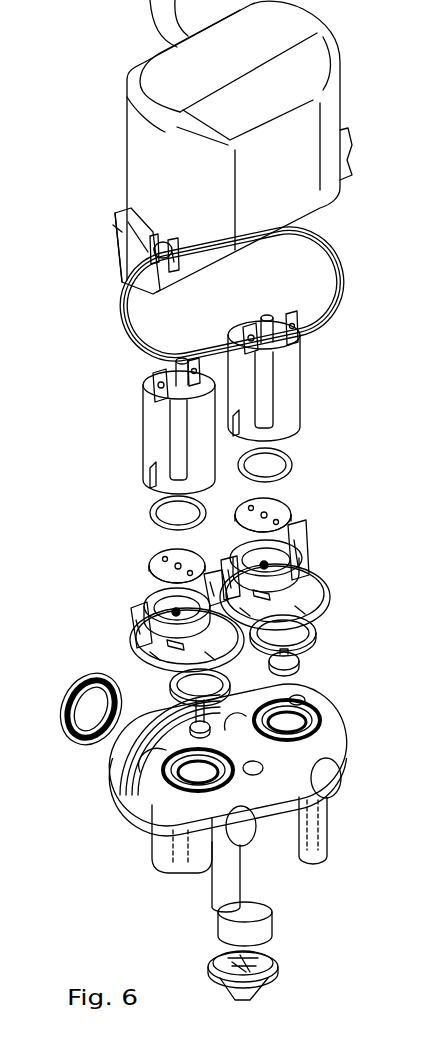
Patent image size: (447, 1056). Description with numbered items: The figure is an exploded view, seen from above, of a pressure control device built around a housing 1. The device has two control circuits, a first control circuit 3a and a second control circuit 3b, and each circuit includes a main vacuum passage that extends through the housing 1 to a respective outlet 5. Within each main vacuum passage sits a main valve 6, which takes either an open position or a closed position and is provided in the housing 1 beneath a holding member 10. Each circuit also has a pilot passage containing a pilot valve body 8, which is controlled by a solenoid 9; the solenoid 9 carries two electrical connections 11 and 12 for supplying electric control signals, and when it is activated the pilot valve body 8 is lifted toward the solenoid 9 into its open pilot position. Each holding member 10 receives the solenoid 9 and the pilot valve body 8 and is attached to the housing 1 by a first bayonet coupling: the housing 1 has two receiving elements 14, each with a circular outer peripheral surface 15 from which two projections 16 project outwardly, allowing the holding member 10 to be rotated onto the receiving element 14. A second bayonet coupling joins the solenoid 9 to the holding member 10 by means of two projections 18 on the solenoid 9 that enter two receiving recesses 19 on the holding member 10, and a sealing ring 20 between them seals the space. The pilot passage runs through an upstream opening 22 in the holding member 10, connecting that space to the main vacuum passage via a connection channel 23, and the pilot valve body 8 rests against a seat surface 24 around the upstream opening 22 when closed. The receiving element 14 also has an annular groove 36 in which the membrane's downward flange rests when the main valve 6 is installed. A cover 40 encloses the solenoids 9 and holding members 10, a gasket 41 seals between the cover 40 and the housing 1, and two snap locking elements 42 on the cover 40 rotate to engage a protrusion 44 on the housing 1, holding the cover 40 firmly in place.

The housing 1 is at (163, 842).
The first control circuit 3a is at (100, 392).
The second control circuit 3b is at (330, 318).
The outlet 5 is at (213, 885).
The main valve 6 is at (167, 680).
The pilot valve body 8 is at (153, 567).
The solenoid 9 is at (150, 437).
The holding member 10 is at (150, 658).
The electrical connection 11 is at (153, 375).
The electrical connection 12 is at (173, 363).
The receiving element 14 is at (317, 737).
The outer peripheral surface 15 is at (218, 793).
The projection 16 is at (170, 783).
The projection 18 is at (143, 478).
The receiving recess 19 is at (150, 590).
The sealing ring 20 is at (150, 515).
The upstream opening 22 is at (147, 602).
The connection channel 23 is at (190, 728).
The seat surface 24 is at (140, 642).
The annular groove 36 is at (313, 697).
The cover 40 is at (140, 152).
The gasket 41 is at (127, 323).
The snap locking element 42 is at (127, 270).
The protrusion 44 is at (160, 841).